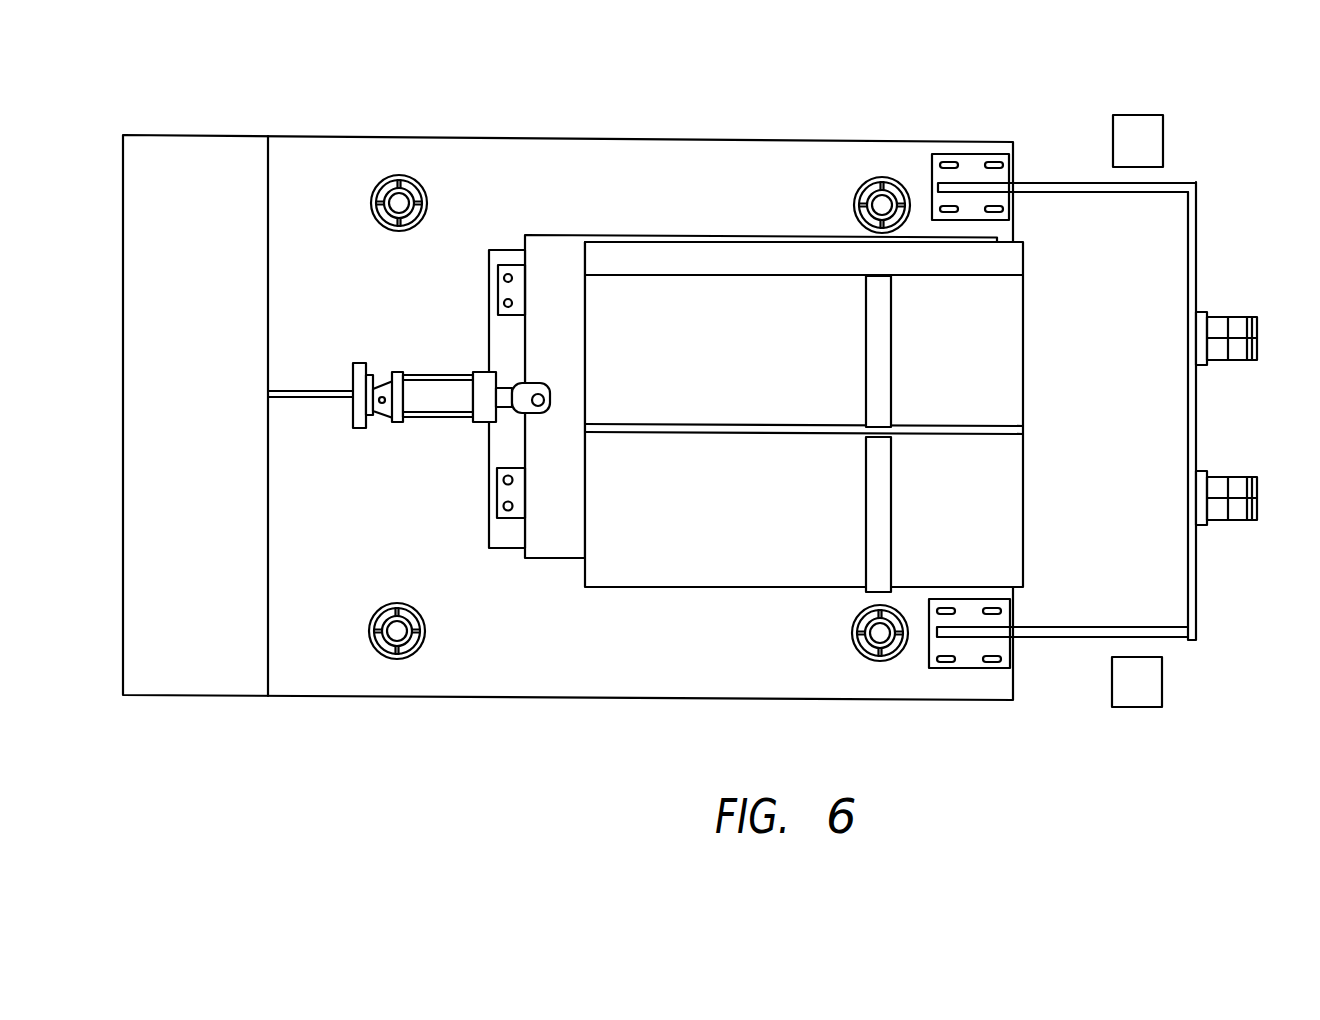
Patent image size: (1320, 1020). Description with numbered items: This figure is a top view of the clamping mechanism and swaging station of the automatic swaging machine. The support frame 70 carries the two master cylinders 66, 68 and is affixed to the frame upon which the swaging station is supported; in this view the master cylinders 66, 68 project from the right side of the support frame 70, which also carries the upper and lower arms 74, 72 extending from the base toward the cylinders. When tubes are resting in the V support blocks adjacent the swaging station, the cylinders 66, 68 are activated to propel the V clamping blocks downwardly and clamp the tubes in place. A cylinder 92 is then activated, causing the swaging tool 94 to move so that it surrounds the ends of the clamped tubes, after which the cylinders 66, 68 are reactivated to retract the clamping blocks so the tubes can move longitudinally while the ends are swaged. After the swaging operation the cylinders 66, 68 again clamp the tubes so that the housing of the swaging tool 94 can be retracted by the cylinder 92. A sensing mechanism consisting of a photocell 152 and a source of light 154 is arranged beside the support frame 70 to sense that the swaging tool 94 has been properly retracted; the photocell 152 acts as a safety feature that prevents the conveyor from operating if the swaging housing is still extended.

The master cylinder 66 is at (1235, 510).
The master cylinder 68 is at (1235, 323).
The support frame 70 is at (1092, 416).
The lower arm 72 is at (1040, 638).
The upper arm 74 is at (1062, 187).
The cylinder 92 is at (440, 405).
The swaging tool 94 is at (633, 297).
The photocell 152 is at (1148, 678).
The source of light 154 is at (1127, 135).